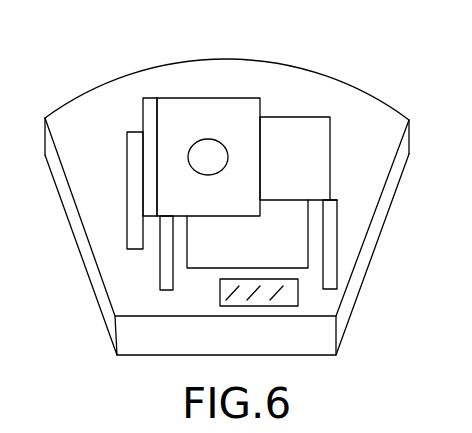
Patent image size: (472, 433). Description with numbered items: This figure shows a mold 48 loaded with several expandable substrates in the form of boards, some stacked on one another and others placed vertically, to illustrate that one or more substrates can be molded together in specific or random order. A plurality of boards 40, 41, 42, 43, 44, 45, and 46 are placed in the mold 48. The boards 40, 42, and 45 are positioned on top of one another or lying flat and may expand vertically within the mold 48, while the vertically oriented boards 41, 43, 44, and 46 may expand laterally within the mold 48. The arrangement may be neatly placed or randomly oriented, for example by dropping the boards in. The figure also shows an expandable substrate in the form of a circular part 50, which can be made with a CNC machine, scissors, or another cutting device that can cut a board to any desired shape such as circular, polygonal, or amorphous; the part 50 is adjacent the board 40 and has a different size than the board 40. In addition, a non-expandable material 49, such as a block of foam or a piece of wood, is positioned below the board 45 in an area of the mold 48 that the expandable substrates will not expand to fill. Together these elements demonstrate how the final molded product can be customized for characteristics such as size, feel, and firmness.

The board 40 is at (216, 108).
The board 41 is at (152, 107).
The board 42 is at (310, 123).
The board 43 is at (133, 173).
The board 44 is at (167, 266).
The board 45 is at (296, 231).
The board 46 is at (337, 208).
The mold 48 is at (388, 107).
The non-expandable materials 49 is at (298, 294).
The part 50 is at (197, 156).